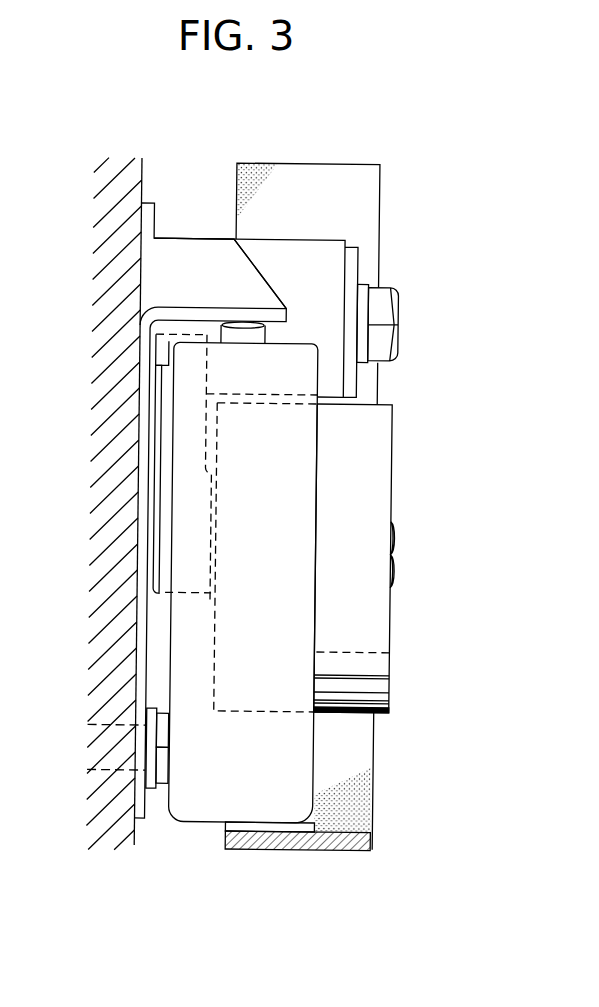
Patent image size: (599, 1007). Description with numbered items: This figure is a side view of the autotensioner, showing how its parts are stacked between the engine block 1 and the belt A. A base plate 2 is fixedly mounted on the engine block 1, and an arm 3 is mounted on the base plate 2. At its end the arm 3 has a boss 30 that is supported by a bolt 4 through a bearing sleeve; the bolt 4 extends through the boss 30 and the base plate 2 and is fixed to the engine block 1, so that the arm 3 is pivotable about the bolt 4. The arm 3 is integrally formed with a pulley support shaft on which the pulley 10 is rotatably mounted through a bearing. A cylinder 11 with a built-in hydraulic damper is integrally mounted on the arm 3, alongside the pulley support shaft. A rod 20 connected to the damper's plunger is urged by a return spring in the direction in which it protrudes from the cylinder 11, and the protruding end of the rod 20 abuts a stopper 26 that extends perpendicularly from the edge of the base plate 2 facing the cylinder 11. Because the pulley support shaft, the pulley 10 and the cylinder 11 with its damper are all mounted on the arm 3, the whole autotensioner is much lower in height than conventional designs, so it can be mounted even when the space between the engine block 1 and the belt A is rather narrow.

The belt A is at (362, 183).
The engine block 1 is at (128, 190).
The base plate 2 is at (149, 383).
The stopper 26 is at (229, 306).
The arm 3 is at (166, 468).
The cylinder 11 is at (188, 630).
The rod 20 is at (280, 331).
The boss 30 is at (285, 255).
The bolt 4 is at (381, 310).
The pulley 10 is at (374, 480).